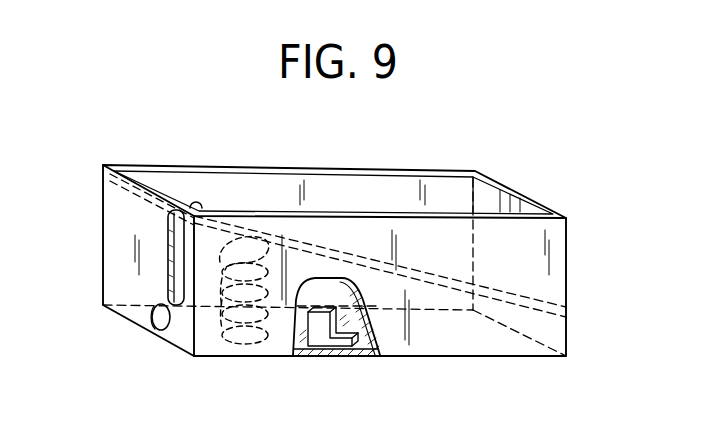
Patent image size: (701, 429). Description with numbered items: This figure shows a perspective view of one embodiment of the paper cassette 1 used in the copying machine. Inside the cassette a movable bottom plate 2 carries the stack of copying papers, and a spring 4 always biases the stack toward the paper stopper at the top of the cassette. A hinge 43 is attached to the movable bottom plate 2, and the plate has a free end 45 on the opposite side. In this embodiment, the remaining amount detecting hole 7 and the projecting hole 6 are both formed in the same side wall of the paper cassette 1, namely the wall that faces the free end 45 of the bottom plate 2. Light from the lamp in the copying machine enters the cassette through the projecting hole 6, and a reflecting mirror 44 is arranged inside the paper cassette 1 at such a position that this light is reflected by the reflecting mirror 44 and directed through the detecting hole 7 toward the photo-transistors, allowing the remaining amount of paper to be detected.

The paper cassette 1 is at (503, 192).
The movable bottom plate 2 is at (190, 198).
The spring 4 is at (250, 346).
The projecting hole 6 is at (168, 331).
The remaining amount detecting hole 7 is at (168, 244).
The hinge 43 is at (515, 290).
The reflecting mirror 44 is at (325, 340).
The free end 45 is at (130, 190).